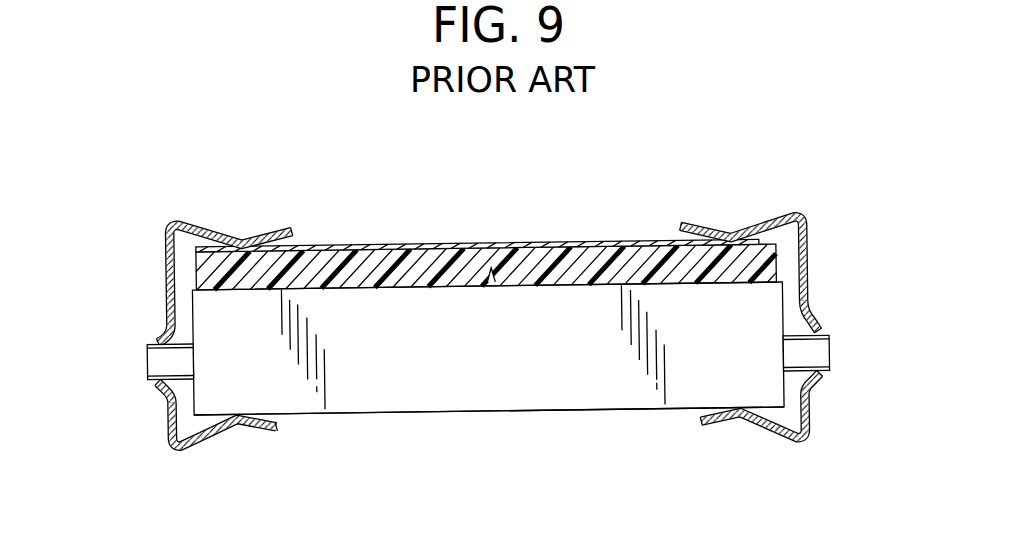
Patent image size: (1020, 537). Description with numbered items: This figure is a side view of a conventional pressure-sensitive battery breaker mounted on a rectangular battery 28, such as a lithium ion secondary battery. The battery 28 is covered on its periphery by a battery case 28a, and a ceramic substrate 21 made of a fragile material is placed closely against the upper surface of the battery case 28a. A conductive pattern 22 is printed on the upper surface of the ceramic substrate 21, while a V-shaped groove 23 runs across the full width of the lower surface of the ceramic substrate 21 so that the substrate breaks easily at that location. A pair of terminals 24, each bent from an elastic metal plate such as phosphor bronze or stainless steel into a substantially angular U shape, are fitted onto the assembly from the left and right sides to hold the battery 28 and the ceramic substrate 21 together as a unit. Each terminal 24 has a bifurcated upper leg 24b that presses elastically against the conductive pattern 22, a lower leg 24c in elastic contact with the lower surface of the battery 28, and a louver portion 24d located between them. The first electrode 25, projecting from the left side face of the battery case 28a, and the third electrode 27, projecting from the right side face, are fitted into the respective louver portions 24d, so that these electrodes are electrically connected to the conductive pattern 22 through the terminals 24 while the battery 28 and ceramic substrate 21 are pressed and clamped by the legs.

The ceramic substrate 21 is at (387, 267).
The conductive pattern 22 is at (597, 247).
The V-shaped groove 23 is at (493, 280).
The terminal 24 is at (151, 271).
The leg 24b is at (241, 232).
The leg 24c is at (238, 420).
The louver portion 24d is at (813, 318).
The first electrode 25 is at (167, 360).
The third electrode 27 is at (815, 352).
The battery 28 is at (480, 375).
The battery case 28a is at (577, 378).